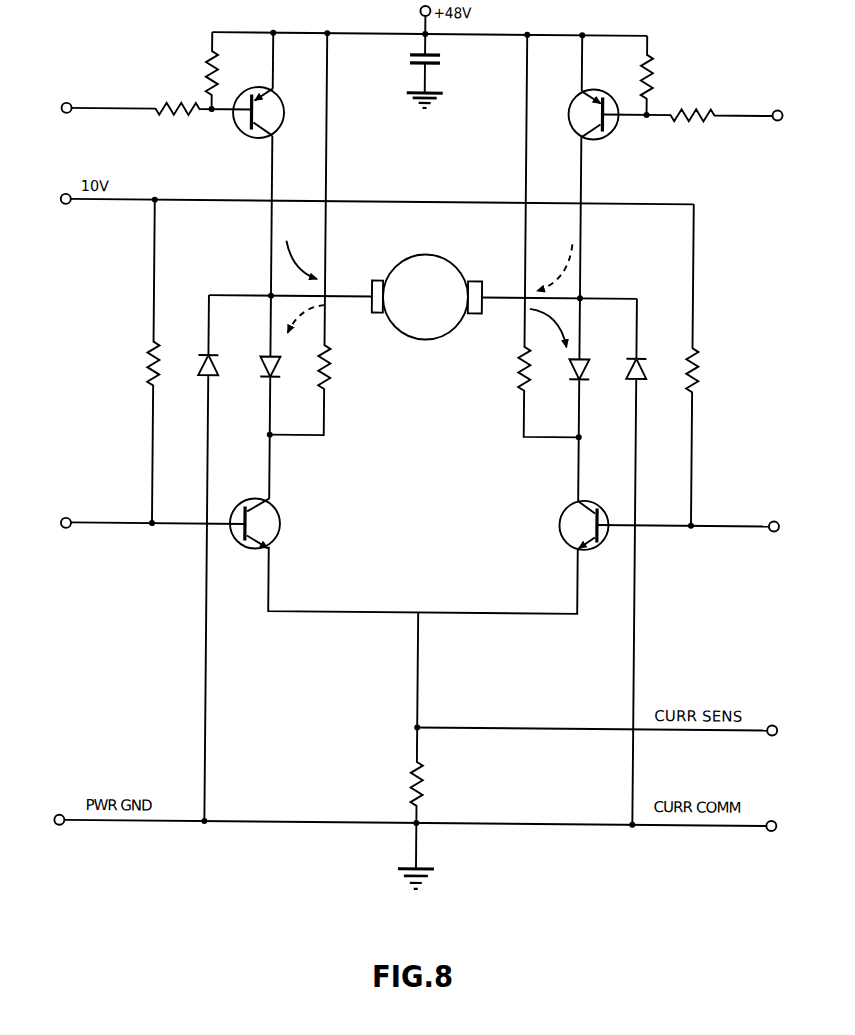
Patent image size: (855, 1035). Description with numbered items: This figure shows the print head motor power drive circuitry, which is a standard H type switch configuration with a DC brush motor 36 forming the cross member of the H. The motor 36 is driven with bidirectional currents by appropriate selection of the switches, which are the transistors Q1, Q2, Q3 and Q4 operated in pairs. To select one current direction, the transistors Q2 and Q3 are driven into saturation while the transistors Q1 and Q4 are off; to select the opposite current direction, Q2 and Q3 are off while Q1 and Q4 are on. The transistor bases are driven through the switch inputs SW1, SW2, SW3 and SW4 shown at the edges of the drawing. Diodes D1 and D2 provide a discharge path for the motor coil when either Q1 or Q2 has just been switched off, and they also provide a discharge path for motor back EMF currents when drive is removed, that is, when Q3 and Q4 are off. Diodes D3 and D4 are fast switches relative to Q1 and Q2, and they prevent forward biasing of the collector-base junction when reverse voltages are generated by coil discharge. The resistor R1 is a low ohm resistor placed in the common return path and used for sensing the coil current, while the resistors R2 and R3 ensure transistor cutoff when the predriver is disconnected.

The DC brush motor 36 is at (427, 339).
The transistor Q1 is at (269, 523).
The transistor Q2 is at (572, 525).
The transistor Q3 is at (270, 113).
The transistor Q4 is at (580, 114).
The diode D1 is at (218, 558).
The diode D2 is at (648, 562).
The diode D3 is at (280, 428).
The diode D4 is at (591, 430).
The resistor R1 is at (432, 740).
The resistor R2 is at (137, 361).
The resistor R3 is at (708, 365).
The switch input SW1 is at (157, 101).
The switch input SW2 is at (692, 108).
The switch input SW3 is at (153, 515).
The switch input SW4 is at (688, 519).